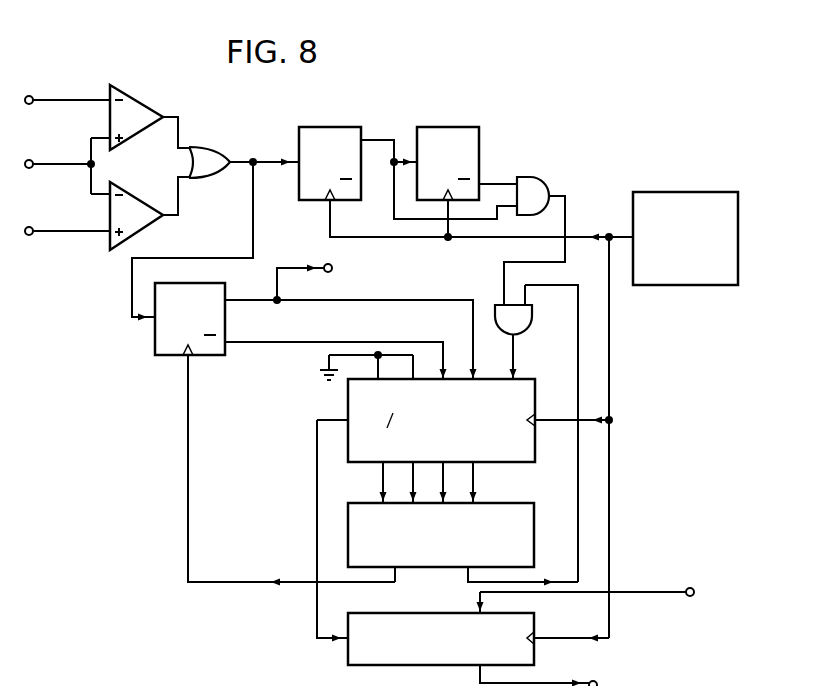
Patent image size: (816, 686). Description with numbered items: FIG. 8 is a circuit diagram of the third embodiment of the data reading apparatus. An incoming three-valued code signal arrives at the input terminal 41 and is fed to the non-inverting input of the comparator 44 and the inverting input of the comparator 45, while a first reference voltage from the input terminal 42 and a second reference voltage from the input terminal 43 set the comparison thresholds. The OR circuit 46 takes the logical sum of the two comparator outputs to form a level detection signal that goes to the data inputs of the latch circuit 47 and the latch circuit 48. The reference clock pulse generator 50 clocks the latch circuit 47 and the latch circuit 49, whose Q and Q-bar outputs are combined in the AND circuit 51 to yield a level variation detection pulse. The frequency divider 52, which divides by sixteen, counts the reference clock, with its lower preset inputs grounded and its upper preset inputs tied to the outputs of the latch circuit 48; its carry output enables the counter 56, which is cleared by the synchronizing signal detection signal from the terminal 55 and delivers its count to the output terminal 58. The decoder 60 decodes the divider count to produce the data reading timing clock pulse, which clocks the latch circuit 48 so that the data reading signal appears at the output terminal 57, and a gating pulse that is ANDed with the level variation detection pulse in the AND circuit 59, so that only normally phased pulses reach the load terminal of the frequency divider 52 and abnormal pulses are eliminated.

The input terminal 41 is at (29, 160).
The input terminal 42 is at (29, 96).
The input terminal 43 is at (29, 227).
The comparator 44 is at (133, 94).
The comparator 45 is at (140, 193).
The OR circuit 46 is at (216, 144).
The latch circuit 47 is at (318, 126).
The latch circuit 48 is at (155, 336).
The latch circuit 49 is at (437, 126).
The reference clock pulse generator 50 is at (683, 192).
The AND circuit 51 is at (535, 176).
The 1/16-frequency divider 52 is at (348, 402).
The terminal 55 is at (691, 588).
The counter 56 is at (437, 613).
The output terminal 57 is at (333, 266).
The output terminal 58 is at (597, 681).
The AND circuit 59 is at (533, 318).
The decoder 60 is at (362, 503).